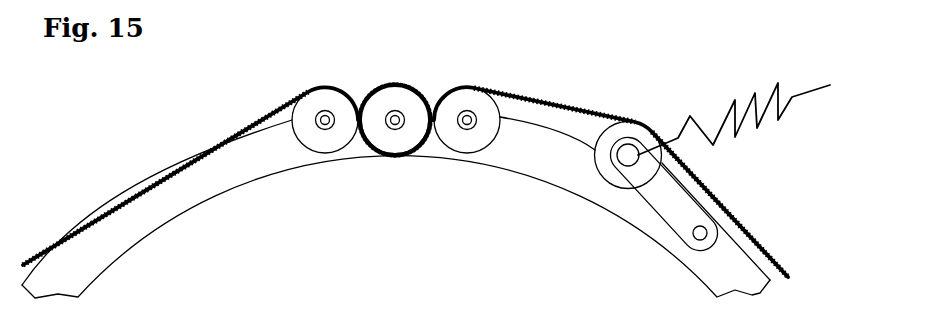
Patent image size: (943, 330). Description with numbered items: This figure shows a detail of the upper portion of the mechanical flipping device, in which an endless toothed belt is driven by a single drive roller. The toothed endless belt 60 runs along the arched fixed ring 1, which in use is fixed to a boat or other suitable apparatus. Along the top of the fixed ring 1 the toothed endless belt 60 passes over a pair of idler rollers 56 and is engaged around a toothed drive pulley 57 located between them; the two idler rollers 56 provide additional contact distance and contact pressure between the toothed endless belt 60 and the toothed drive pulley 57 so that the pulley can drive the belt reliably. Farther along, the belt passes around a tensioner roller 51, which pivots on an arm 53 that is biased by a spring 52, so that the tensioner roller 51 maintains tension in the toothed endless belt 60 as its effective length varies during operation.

The fixed ring 1 is at (157, 171).
The toothed endless belt 60 is at (152, 192).
The idler rollers 56 is at (325, 87).
The toothed drive pulley 57 is at (396, 88).
The tensioner roller 51 is at (635, 123).
The spring 52 is at (713, 112).
The arm 53 is at (658, 215).